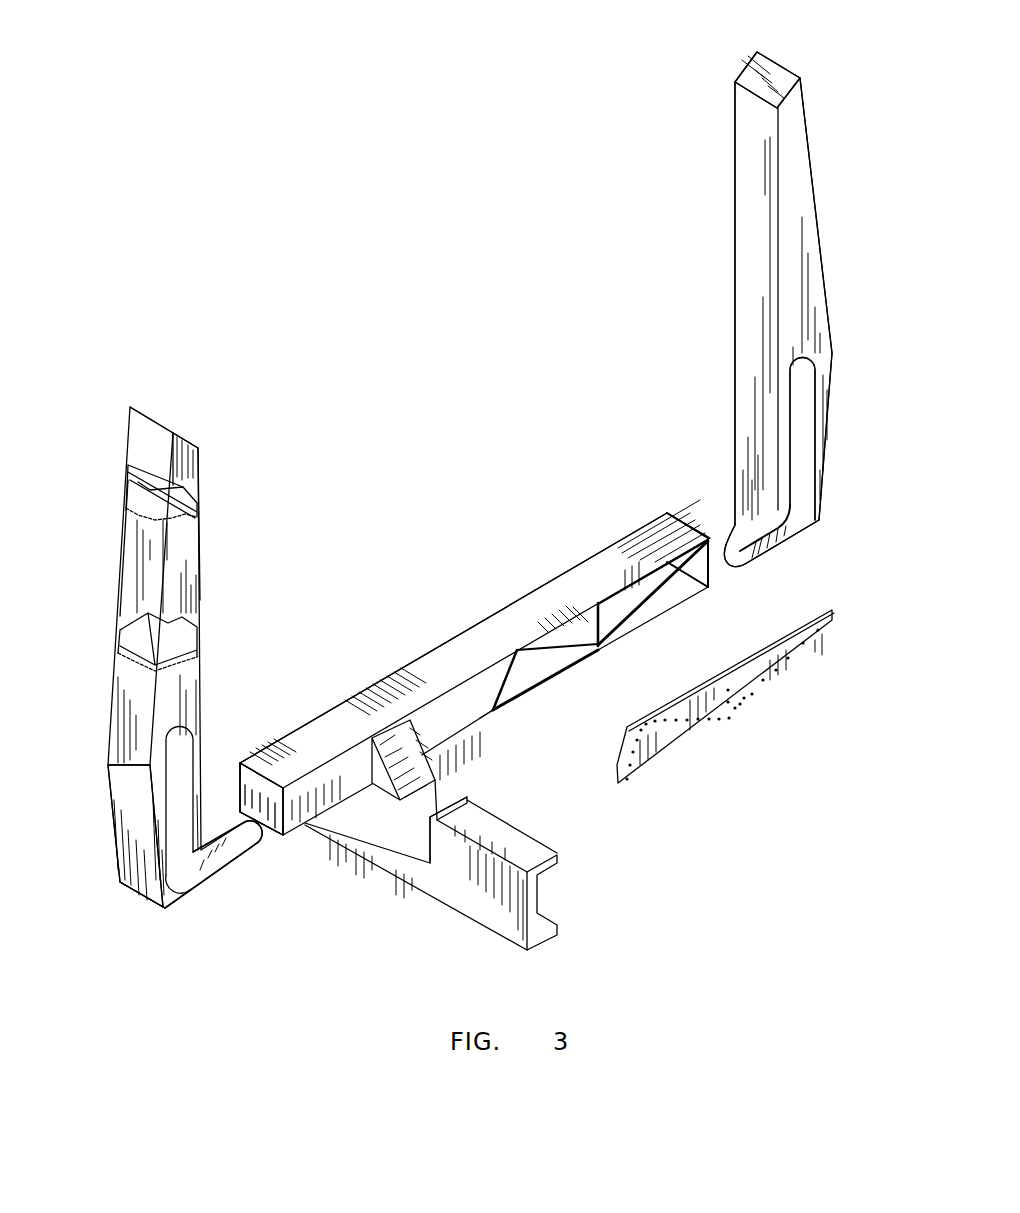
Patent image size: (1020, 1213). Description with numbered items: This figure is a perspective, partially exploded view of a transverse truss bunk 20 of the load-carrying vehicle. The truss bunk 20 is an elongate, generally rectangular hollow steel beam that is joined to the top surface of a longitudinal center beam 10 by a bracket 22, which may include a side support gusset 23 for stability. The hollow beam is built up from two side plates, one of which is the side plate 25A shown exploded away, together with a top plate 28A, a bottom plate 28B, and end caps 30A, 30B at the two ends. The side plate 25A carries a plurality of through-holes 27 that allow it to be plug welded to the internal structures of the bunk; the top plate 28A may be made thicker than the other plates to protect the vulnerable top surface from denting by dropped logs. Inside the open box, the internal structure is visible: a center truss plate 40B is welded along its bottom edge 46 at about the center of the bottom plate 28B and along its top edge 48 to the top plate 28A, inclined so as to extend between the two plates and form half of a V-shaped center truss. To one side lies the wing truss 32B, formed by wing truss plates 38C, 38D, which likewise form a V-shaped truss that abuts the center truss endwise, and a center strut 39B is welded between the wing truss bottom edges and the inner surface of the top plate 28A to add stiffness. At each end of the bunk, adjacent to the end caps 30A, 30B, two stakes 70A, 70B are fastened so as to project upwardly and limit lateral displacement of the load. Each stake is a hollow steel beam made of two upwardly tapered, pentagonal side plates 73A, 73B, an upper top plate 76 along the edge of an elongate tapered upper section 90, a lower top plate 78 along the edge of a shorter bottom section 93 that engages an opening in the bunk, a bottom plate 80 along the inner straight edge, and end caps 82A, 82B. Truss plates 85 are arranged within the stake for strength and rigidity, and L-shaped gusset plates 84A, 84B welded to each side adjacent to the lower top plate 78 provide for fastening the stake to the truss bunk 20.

The center beam 10 is at (533, 848).
The truss bunk 20 is at (422, 638).
The bracket 22 is at (438, 741).
The side support gusset 23 is at (445, 795).
The side plate 25A is at (298, 802).
The through-hole 27 is at (752, 695).
The top plate 28A is at (668, 511).
The bottom plate 28B is at (698, 584).
The end cap 30A is at (268, 806).
The end cap 30B is at (714, 578).
The wing truss 32B is at (657, 606).
The wing truss plate 38C is at (558, 650).
The wing truss plate 38D is at (643, 587).
The center strut 39B is at (598, 605).
The center truss plate 40B is at (522, 677).
The bottom edge 46 is at (500, 710).
The top edge 48 is at (515, 648).
The stake 70A is at (120, 436).
The stake 70B is at (815, 85).
The side plate 73A is at (816, 285).
The side plate 73B is at (140, 493).
The upper top plate 76 is at (137, 560).
The lower top plate 78 is at (120, 798).
The bottom plate 80 is at (744, 266).
The end cap 82A is at (163, 422).
The end cap 82B is at (752, 75).
The L-shaped gusset plate 84A is at (207, 866).
The L-shaped gusset plate 84B is at (812, 470).
The truss plate 85 is at (150, 637).
The elongate tapered upper section 90 is at (199, 477).
The bottom section 93 is at (174, 897).